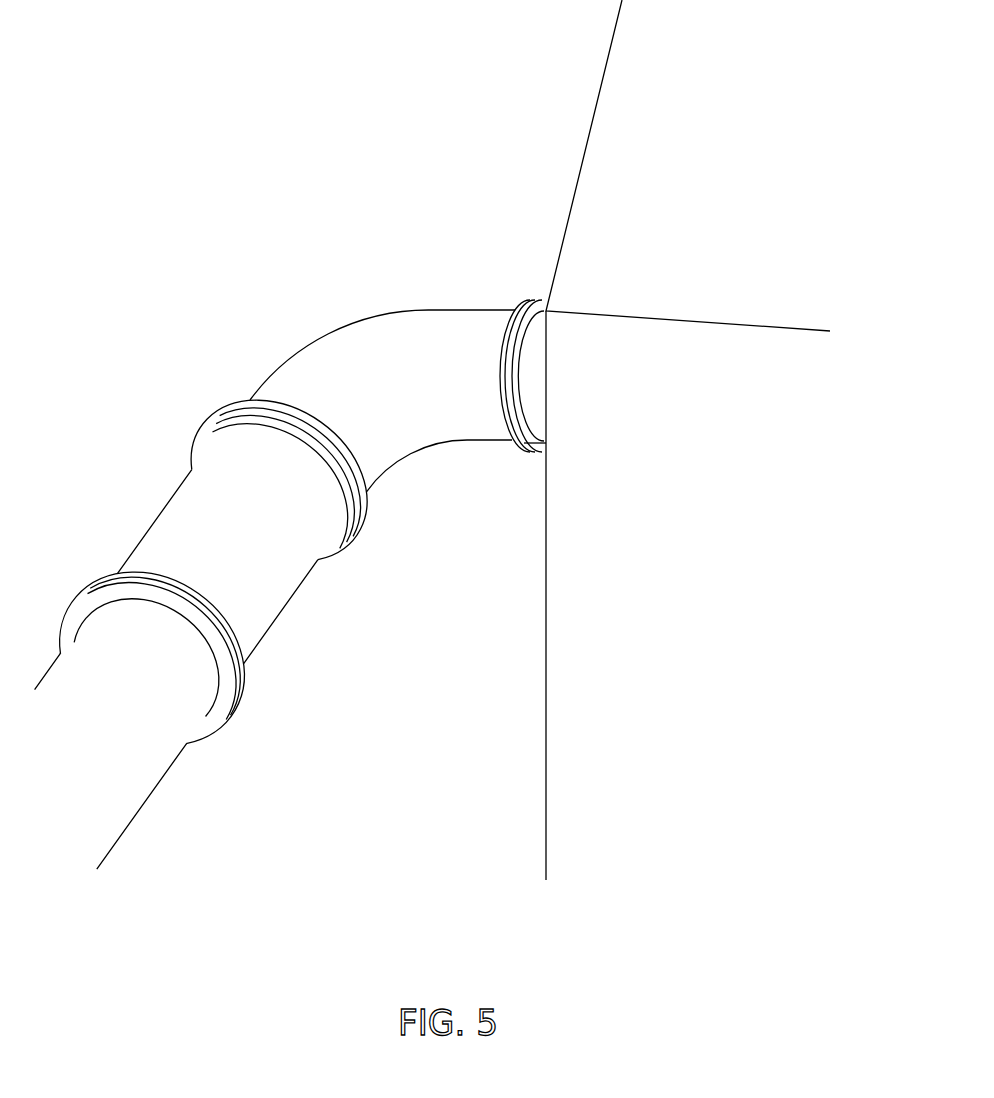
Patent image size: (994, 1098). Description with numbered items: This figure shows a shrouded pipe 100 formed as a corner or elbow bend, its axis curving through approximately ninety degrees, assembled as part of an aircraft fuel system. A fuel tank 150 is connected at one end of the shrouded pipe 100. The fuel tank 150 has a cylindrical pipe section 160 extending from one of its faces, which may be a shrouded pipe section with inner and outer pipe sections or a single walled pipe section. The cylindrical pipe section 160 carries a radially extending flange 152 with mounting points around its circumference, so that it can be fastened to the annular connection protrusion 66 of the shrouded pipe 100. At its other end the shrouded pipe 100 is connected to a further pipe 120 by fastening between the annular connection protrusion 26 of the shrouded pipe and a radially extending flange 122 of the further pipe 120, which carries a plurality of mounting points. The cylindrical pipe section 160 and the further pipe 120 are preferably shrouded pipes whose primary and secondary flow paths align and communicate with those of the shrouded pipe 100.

The shrouded pipe 100 is at (313, 307).
The connection protrusion 26 is at (235, 406).
The connection protrusion 66 is at (518, 299).
The further pipe 120 is at (160, 506).
The radially extending flange 122 is at (333, 558).
The fuel tank 150 is at (592, 105).
The radially extending flange 152 is at (540, 302).
The cylindrical pipe section 160 is at (542, 446).